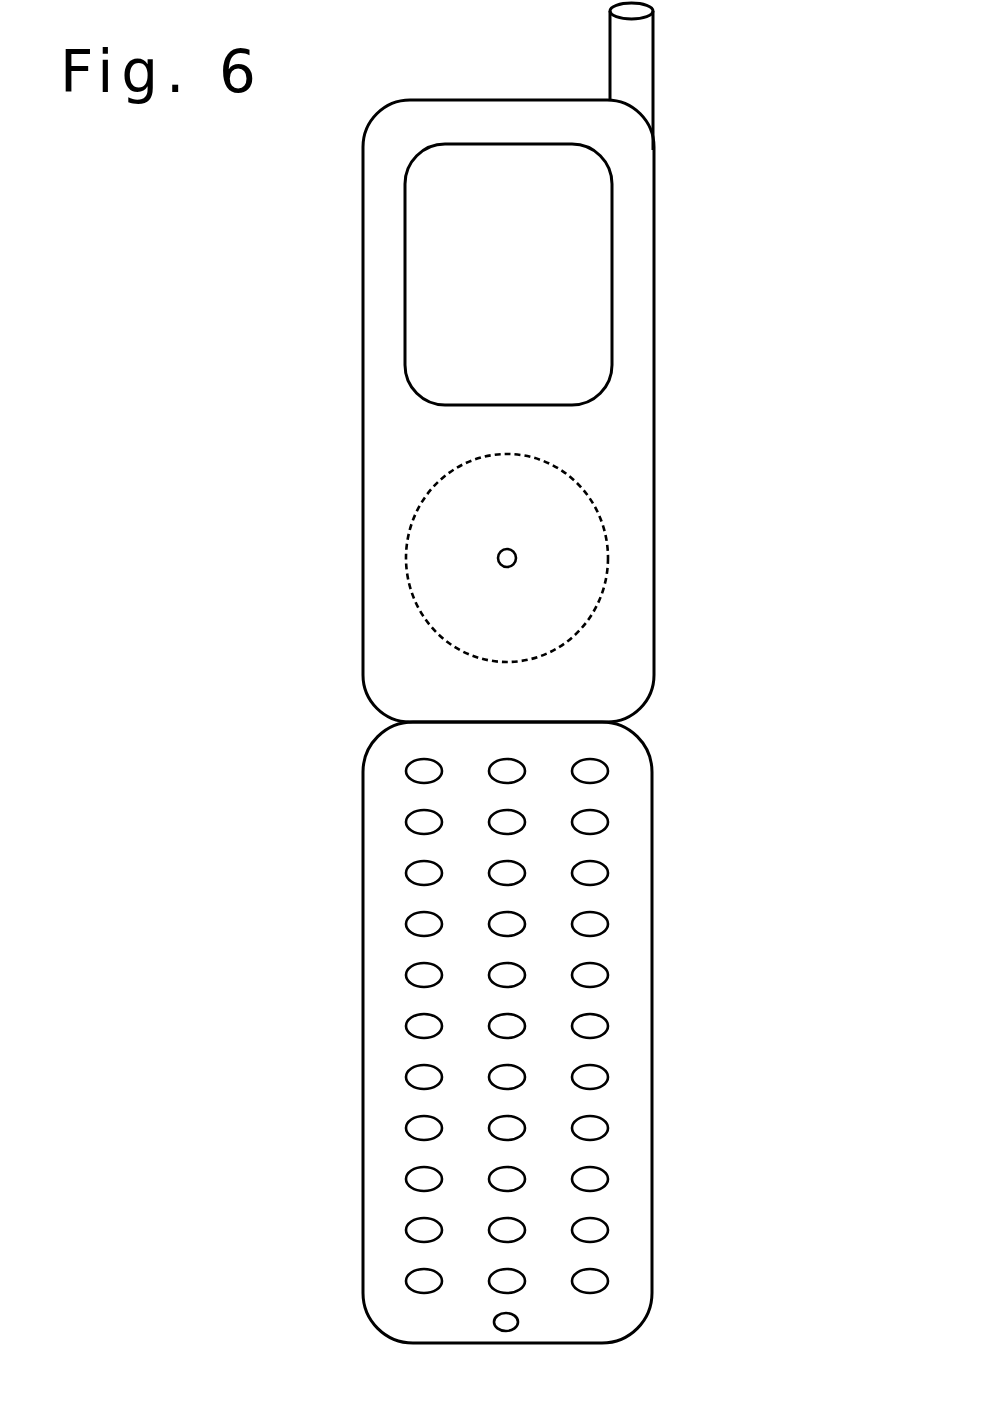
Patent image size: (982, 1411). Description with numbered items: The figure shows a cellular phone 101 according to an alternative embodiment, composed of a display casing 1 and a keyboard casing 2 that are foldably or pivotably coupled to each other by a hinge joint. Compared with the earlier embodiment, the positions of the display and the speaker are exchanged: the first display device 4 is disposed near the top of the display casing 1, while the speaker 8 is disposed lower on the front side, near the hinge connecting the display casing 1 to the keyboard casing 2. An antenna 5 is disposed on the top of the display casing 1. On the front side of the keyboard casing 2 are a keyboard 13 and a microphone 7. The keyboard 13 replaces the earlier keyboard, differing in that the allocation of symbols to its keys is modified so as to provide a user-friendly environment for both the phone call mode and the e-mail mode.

The display casing 1 is at (640, 457).
The keyboard casing 2 is at (640, 908).
The first display device 4 is at (585, 253).
The antenna 5 is at (628, 57).
The microphone 7 is at (506, 1322).
The speaker 8 is at (610, 556).
The keyboard 13 is at (618, 840).
The cellular phone 101 is at (793, 583).